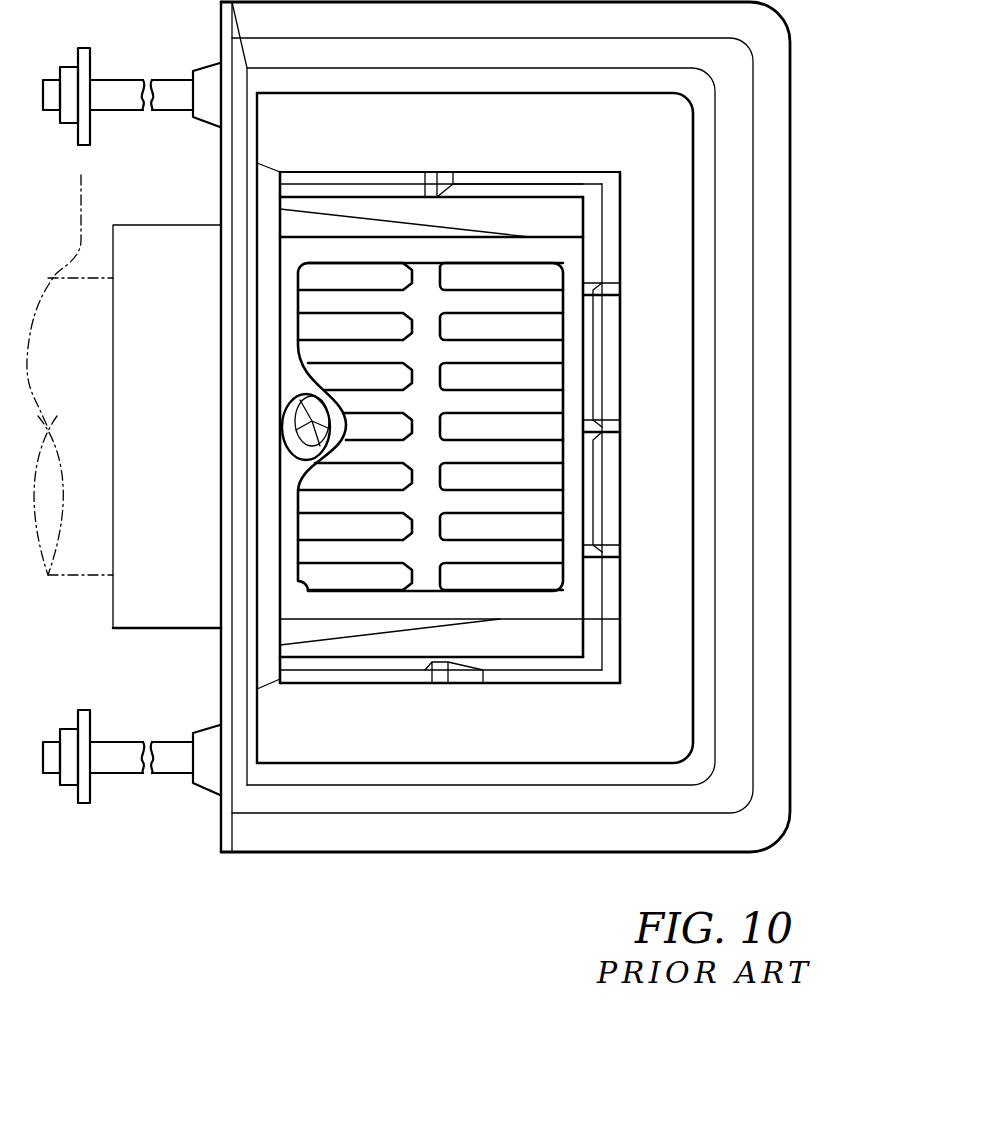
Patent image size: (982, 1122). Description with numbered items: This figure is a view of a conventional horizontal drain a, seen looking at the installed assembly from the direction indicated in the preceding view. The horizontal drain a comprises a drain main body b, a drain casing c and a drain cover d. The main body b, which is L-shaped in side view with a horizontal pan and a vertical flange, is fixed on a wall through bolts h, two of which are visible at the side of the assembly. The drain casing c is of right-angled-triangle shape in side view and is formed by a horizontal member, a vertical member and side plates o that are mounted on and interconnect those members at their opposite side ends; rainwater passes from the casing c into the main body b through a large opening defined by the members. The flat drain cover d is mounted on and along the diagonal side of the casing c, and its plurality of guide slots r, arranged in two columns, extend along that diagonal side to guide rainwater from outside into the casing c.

The horizontal drain a is at (796, 436).
The drain main body b is at (218, 683).
The drain casing c is at (272, 692).
The drain cover d is at (563, 254).
The side plates o is at (347, 172).
The guide slots r is at (330, 277).
The bolts h is at (118, 80).